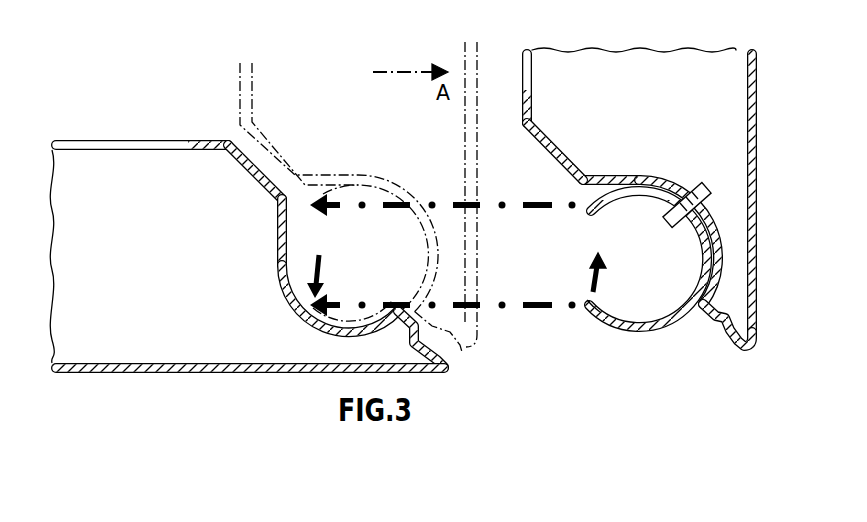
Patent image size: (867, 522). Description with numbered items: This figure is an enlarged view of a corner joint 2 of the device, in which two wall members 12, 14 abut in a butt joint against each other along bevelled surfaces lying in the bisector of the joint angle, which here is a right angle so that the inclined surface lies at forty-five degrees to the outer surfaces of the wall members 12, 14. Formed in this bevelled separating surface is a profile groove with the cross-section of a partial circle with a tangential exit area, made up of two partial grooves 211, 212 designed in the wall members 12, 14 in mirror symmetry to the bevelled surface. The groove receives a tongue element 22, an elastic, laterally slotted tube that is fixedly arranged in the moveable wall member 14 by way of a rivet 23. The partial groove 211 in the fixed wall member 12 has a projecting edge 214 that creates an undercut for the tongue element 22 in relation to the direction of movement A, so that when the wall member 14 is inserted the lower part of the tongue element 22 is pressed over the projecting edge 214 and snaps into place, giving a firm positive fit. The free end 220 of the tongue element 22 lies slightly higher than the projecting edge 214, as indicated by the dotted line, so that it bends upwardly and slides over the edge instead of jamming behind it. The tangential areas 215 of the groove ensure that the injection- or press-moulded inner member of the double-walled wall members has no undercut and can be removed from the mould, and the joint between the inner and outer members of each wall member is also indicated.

The joint 2 is at (343, 172).
The wall member 12 is at (200, 373).
The wall member 14 is at (652, 50).
The tongue element 22 is at (633, 327).
The rivet 23 is at (693, 187).
The partial groove 211 is at (284, 296).
The partial groove 212 is at (648, 177).
The projecting edge 214 is at (422, 302).
The tangential area 215 is at (276, 220).
The free end 220 is at (595, 305).